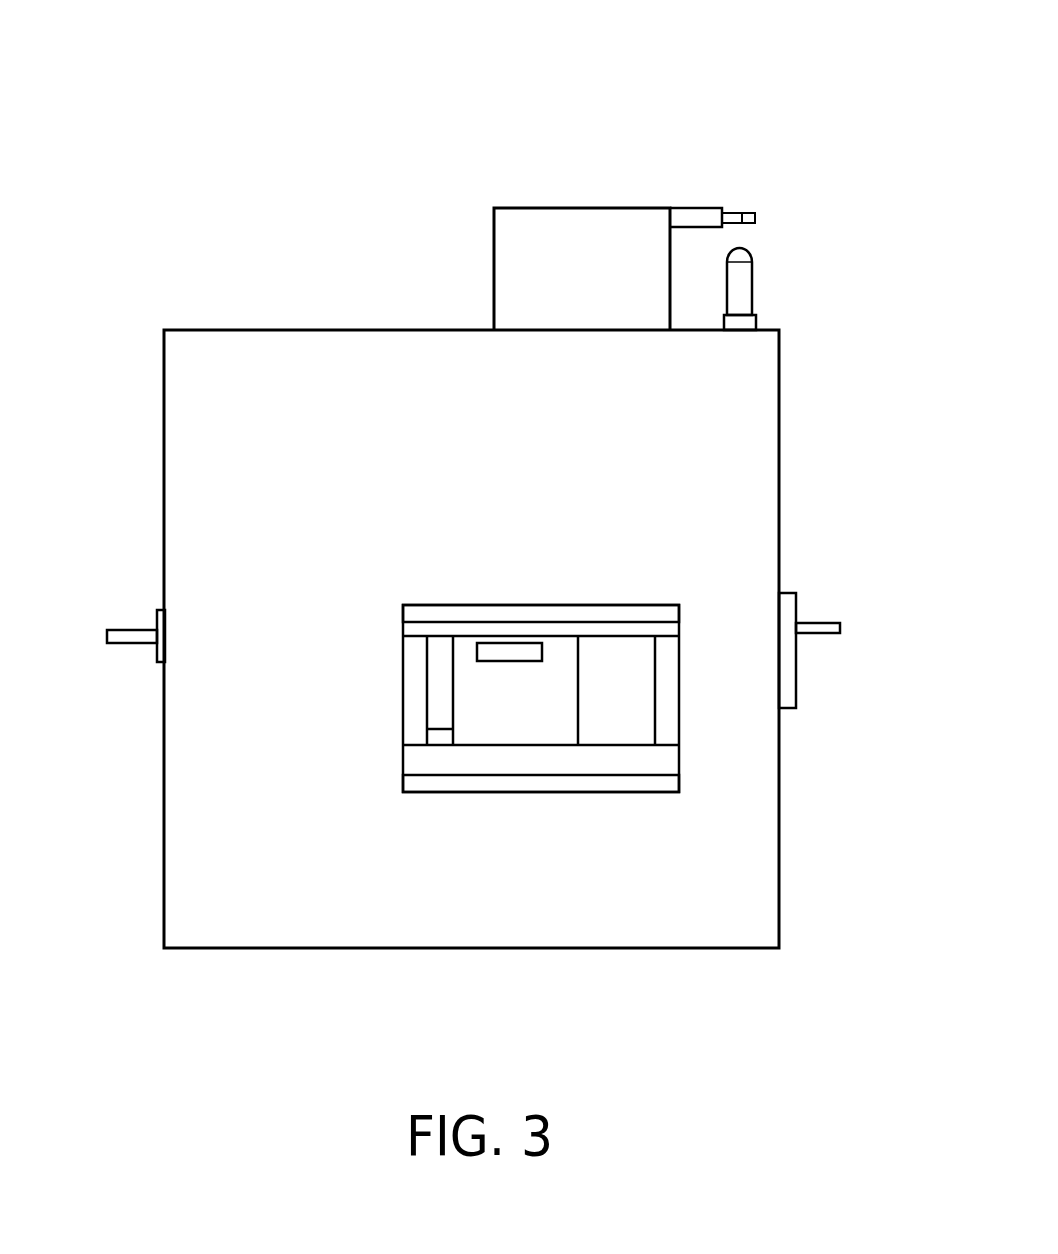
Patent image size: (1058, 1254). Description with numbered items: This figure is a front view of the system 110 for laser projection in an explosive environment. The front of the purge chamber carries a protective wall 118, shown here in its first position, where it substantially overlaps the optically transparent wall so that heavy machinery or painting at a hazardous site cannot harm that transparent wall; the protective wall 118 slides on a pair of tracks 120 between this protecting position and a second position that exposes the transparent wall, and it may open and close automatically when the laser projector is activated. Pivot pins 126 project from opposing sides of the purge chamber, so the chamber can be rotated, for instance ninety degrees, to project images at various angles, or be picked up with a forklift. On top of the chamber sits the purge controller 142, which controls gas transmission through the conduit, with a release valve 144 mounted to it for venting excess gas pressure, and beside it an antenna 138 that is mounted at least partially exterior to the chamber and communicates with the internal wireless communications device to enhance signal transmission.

The system 110 is at (514, 478).
The protective wall 118 is at (472, 745).
The tracks 120 is at (538, 621).
The pivot pin 126 is at (107, 638).
The antenna 138 is at (757, 260).
The purge controller 142 is at (603, 208).
The release valve 144 is at (722, 208).